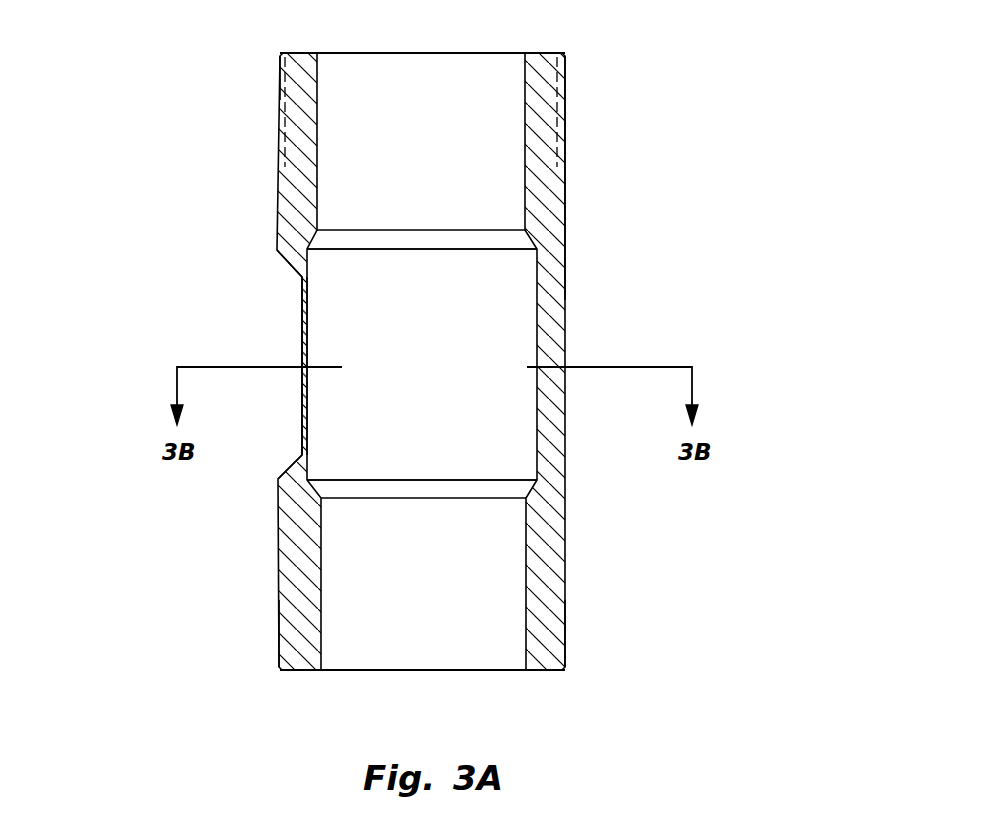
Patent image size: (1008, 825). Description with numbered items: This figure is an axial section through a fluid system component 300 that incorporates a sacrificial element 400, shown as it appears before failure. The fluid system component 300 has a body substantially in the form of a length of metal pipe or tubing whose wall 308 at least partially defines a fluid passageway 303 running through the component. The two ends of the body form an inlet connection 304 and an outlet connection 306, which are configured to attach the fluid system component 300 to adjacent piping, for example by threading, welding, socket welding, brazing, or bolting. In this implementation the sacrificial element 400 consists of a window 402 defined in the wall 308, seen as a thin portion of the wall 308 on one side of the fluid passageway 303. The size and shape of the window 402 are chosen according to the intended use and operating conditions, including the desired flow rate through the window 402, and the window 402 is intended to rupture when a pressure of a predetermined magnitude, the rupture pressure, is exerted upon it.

The fluid system component 300 is at (198, 108).
The fluid passageway 303 is at (503, 315).
The inlet connection 304 is at (297, 672).
The outlet connection 306 is at (537, 52).
The wall 308 is at (548, 218).
The sacrificial element 400 is at (278, 305).
The window 402 is at (297, 418).